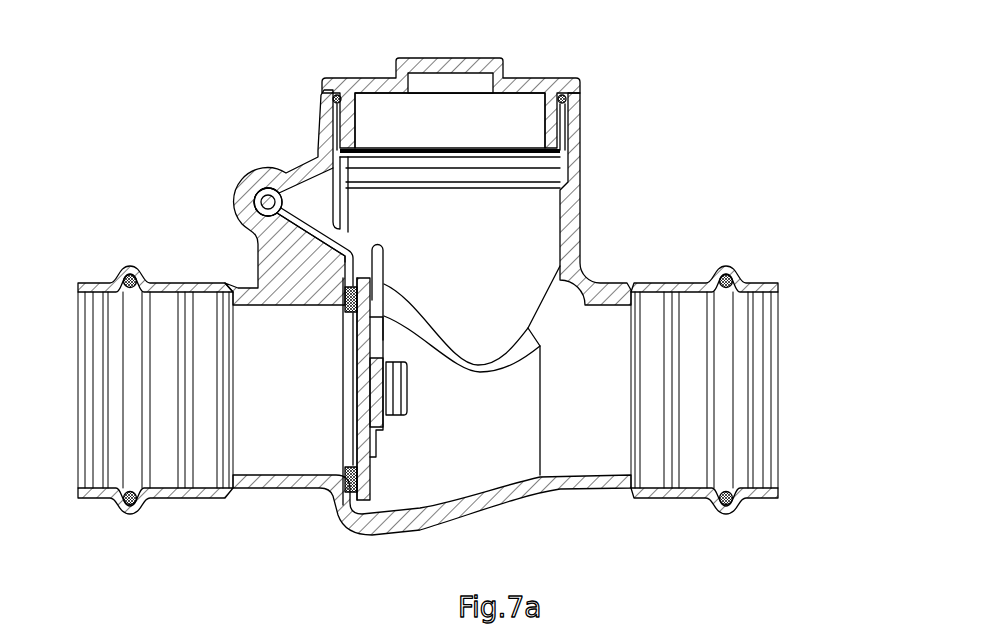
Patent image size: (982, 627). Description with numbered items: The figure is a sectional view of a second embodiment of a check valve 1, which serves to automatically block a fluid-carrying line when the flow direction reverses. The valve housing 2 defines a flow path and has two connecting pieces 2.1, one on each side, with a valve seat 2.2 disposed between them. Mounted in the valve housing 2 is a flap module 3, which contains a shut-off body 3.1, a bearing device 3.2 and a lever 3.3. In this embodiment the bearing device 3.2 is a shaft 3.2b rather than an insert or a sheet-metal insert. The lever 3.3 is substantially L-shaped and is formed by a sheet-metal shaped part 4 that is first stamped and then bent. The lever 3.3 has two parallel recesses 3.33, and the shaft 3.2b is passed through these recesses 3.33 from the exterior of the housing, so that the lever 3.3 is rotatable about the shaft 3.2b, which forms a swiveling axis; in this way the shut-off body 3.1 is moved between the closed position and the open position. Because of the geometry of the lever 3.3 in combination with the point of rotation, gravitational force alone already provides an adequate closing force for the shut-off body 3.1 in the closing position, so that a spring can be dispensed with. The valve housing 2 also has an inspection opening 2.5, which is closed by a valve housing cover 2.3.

The check valve 1 is at (687, 186).
The valve housing 2 is at (281, 276).
The connecting pieces 2.1 is at (98, 290).
The valve seat 2.2 is at (368, 493).
The valve housing cover 2.3 is at (537, 85).
The inspection opening 2.5 is at (468, 135).
The flap module 3 is at (402, 236).
The shut-off body 3.1 is at (379, 458).
The bearing device 3.2 is at (303, 199).
The shaft 3.2b is at (265, 196).
The lever 3.3 is at (403, 347).
The recesses 3.33 is at (262, 198).
The sheet-metal shaped part 4 is at (384, 286).